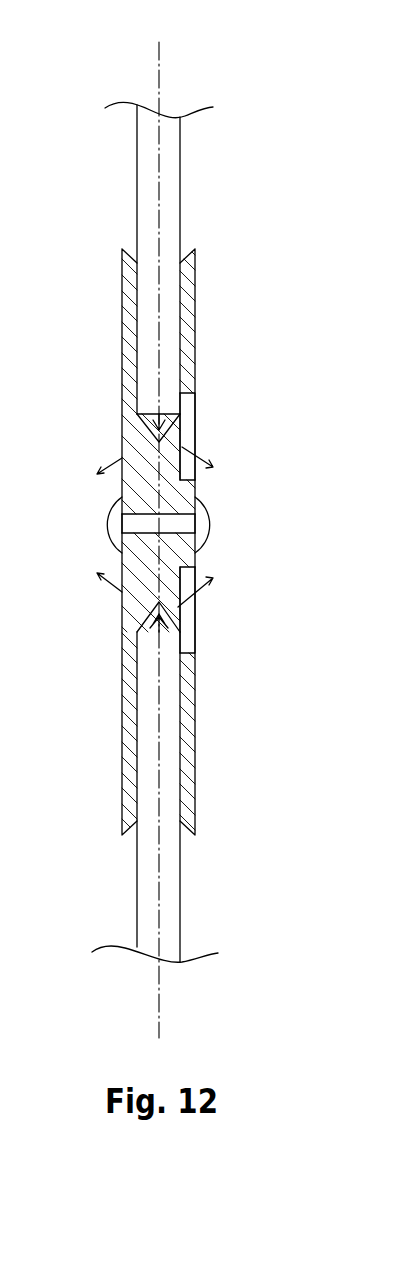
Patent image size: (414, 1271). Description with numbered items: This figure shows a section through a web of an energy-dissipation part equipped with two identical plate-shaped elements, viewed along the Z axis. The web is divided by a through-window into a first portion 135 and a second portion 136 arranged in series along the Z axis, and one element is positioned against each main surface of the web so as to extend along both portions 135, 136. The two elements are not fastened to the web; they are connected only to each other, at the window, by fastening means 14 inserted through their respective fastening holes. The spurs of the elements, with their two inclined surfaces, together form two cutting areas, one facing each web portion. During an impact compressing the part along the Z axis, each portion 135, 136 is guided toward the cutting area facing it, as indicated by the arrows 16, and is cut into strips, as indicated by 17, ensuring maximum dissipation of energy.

The Z axis z is at (159, 63).
The first portion 135 is at (168, 202).
The second portion 136 is at (168, 905).
The fastening means 14 is at (205, 523).
The guiding of the first web portion 16 is at (119, 422).
The cutting into strips of the first web portion 17 is at (235, 436).